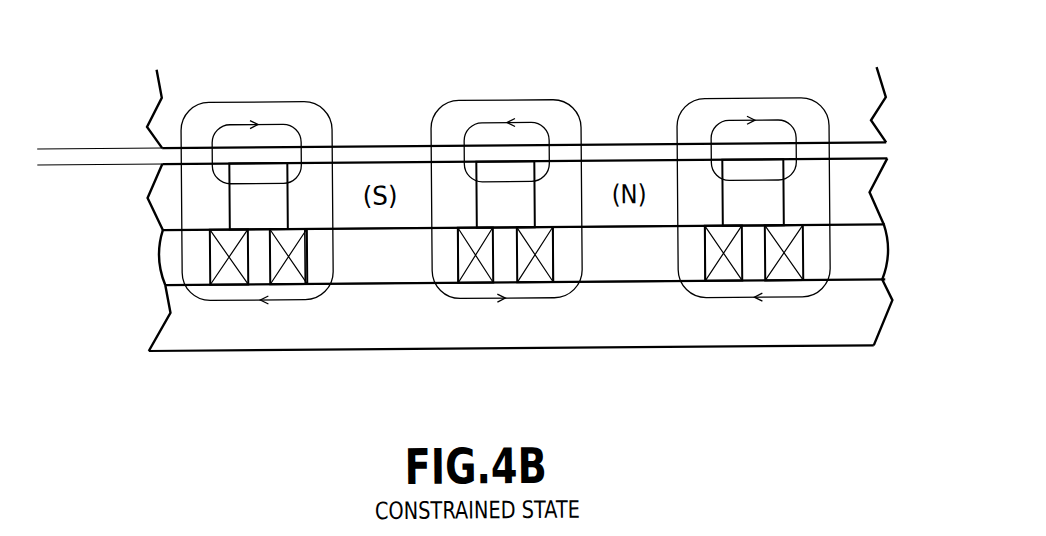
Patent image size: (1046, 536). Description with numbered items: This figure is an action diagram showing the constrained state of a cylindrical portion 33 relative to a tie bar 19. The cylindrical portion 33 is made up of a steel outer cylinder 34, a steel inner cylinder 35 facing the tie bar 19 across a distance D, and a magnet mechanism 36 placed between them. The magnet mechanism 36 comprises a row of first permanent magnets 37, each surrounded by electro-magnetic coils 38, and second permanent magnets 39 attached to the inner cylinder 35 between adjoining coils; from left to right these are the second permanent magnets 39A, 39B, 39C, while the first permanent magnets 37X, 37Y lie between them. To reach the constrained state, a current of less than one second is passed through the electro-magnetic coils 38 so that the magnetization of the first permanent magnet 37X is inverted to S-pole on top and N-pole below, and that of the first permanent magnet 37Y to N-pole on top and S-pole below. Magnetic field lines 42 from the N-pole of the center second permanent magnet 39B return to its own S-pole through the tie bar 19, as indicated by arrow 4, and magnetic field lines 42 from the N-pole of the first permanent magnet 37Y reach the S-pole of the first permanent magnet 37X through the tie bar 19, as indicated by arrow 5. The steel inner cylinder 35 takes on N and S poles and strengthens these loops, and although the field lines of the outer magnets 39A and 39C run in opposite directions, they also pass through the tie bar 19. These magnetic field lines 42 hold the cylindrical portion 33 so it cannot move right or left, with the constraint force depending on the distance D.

The tie bar 19 is at (168, 117).
The distance D is at (45, 174).
The cylindrical portion 33 is at (462, 281).
The outer cylinder 34 is at (487, 315).
The inner cylinder 35 is at (173, 194).
The magnet mechanism 36 is at (486, 314).
The first permanent magnet 37 is at (505, 313).
The first permanent magnet 37X is at (353, 269).
The first permanent magnet 37Y is at (660, 271).
The electro-magnetic coil 38 is at (477, 273).
The second permanent magnet 39 is at (477, 142).
The second permanent magnet 39A is at (243, 168).
The second permanent magnet 39B is at (497, 173).
The second permanent magnet 39C is at (742, 174).
The magnetic field lines 42 is at (295, 128).
The arrow 4 is at (527, 123).
The arrow 5 is at (497, 100).